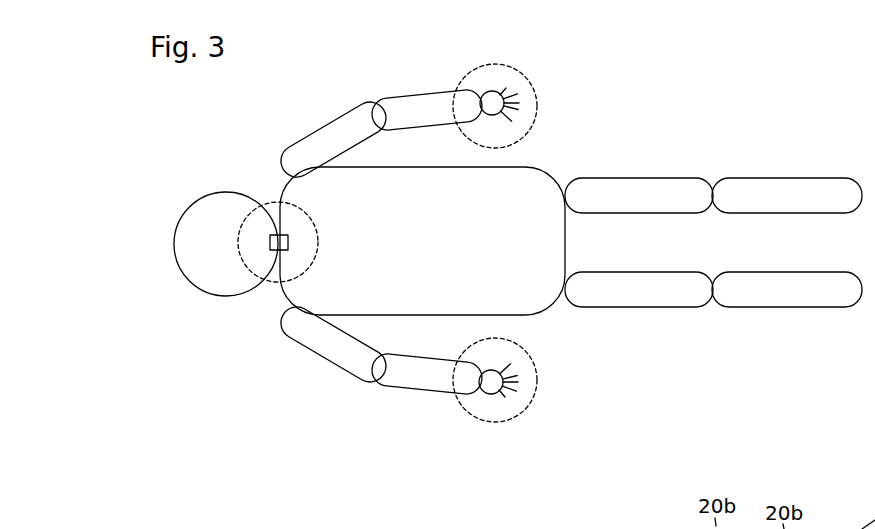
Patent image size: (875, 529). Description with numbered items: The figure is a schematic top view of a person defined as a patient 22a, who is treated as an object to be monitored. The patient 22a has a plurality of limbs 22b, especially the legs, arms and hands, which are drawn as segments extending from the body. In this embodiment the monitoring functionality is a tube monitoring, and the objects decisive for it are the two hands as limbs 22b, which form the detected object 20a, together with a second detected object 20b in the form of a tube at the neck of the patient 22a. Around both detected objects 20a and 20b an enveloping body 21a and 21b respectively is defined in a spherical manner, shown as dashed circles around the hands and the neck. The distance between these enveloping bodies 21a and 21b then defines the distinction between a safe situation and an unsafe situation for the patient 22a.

The detected object 20a is at (518, 98).
The second detected object 20b is at (273, 235).
The enveloping body 21a is at (535, 108).
The enveloping body 21b is at (272, 281).
The patient 22a is at (299, 377).
The limbs 22b is at (466, 84).